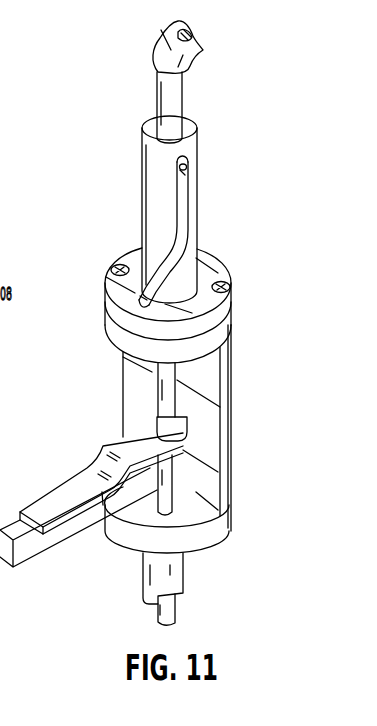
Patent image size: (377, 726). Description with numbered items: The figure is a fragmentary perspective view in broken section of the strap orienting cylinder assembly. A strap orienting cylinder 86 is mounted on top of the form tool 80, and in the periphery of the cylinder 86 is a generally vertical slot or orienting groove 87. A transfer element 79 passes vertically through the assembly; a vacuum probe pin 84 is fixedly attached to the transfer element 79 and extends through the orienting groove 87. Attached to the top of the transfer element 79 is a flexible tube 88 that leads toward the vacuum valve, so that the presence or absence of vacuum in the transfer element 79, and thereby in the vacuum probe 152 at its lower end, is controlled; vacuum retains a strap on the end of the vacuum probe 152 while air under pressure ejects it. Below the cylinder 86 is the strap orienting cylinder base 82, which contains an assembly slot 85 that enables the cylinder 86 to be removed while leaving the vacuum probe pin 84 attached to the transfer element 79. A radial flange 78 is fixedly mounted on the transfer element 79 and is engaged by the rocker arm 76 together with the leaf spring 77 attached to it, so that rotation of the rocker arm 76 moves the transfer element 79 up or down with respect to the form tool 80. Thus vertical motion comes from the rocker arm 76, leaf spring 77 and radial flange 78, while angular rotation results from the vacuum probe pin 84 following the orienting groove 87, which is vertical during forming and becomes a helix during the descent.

The rocker arm 76 is at (67, 534).
The leaf spring 77 is at (102, 448).
The radial flange 78 is at (185, 439).
The transfer element 79 is at (184, 516).
The form tool 80 is at (228, 385).
The strap orienting cylinder base 82 is at (223, 312).
The vacuum probe pin 84 is at (191, 168).
The assembly slot 85 is at (108, 297).
The strap orienting cylinder 86 is at (153, 159).
The orienting groove 87 is at (160, 249).
The flexible tube 88 is at (152, 50).
The vacuum probe 152 is at (177, 609).